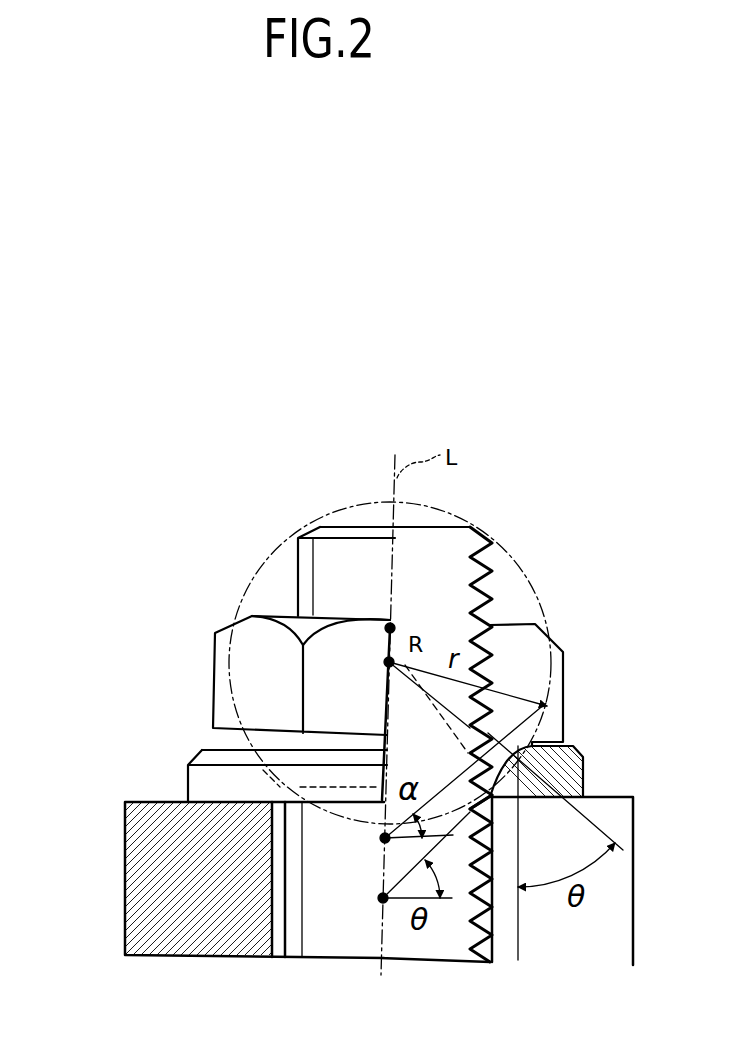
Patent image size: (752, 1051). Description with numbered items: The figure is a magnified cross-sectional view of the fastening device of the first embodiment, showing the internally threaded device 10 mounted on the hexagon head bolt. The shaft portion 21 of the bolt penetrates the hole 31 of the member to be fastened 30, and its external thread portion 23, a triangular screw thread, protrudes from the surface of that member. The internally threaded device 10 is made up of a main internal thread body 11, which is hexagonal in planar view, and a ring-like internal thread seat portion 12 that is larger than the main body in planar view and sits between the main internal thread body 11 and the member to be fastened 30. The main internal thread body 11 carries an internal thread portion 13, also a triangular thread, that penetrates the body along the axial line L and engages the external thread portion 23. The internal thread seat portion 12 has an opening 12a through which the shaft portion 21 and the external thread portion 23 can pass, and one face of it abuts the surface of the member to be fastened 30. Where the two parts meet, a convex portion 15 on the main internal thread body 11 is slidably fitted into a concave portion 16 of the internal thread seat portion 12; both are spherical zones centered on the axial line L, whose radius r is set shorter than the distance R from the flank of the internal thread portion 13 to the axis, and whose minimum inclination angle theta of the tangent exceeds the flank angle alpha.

The internally threaded device 10 is at (108, 607).
The main internal thread body 11 is at (212, 697).
The internal thread seat portion 12 is at (188, 782).
The opening 12a is at (243, 733).
The internal thread portion 13 is at (487, 665).
The convex portion 15 is at (508, 745).
The concave portion 16 is at (583, 765).
The shaft portion 21 is at (327, 938).
The external thread portion 23 is at (452, 512).
The member to be fastened 30 is at (610, 905).
The hole 31 is at (490, 963).